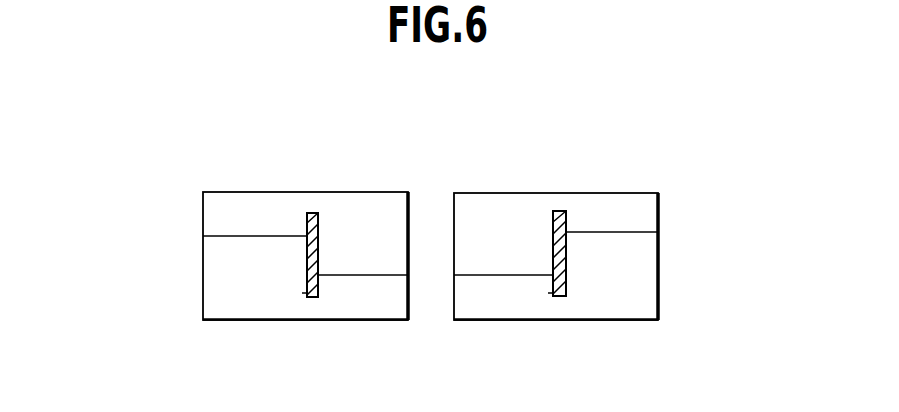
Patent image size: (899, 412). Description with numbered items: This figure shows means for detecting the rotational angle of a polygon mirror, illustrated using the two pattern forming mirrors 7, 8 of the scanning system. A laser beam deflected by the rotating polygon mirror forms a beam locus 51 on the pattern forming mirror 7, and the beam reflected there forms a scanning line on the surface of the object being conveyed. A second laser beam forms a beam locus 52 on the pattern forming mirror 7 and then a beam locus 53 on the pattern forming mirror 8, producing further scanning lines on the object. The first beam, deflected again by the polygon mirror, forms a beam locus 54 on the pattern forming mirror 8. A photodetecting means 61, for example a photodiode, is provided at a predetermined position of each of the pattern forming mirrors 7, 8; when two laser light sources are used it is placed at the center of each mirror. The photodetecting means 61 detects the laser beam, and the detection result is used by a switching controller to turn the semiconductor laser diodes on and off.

The pattern forming mirror 7 is at (613, 192).
The pattern forming mirror 8 is at (233, 192).
The beam locus 51 is at (633, 232).
The beam locus 52 is at (522, 277).
The beam locus 53 is at (390, 277).
The beam locus 54 is at (232, 236).
The photodetecting means 61 is at (553, 220).